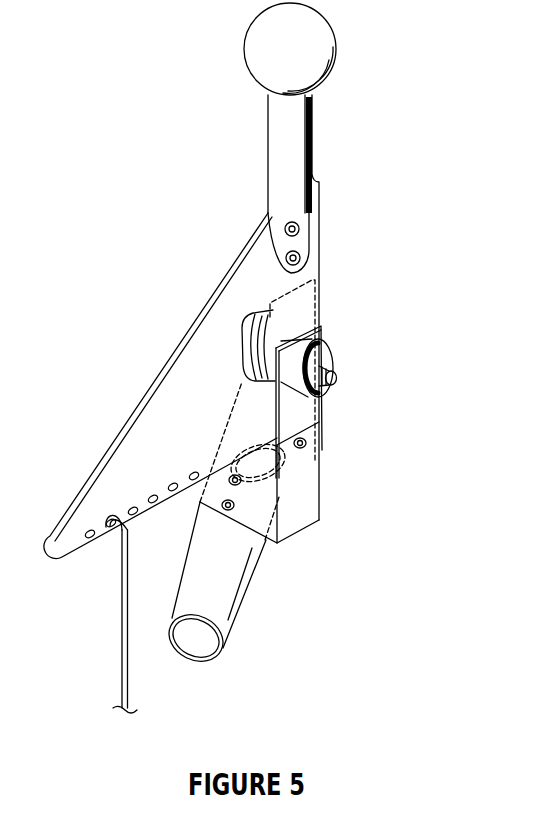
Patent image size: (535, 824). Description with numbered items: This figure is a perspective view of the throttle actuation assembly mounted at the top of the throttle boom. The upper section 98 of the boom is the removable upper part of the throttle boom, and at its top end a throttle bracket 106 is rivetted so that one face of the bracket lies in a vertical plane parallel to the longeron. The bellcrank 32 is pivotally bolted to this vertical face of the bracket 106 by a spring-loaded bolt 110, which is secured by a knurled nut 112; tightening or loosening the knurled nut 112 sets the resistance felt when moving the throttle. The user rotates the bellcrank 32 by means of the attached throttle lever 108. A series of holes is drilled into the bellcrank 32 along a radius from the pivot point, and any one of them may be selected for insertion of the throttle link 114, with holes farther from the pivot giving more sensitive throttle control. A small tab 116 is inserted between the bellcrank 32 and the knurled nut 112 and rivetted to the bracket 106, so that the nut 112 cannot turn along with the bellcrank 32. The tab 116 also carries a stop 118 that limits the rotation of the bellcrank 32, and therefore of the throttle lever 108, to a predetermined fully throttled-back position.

The bellcrank 32 is at (150, 392).
The upper section 98 is at (243, 598).
The throttle bracket 106 is at (317, 500).
The throttle lever 108 is at (268, 157).
The spring-loaded bolt 110 is at (333, 390).
The knurled nut 112 is at (325, 355).
The throttle link 114 is at (122, 660).
The small tab 116 is at (323, 433).
The stop 118 is at (276, 445).